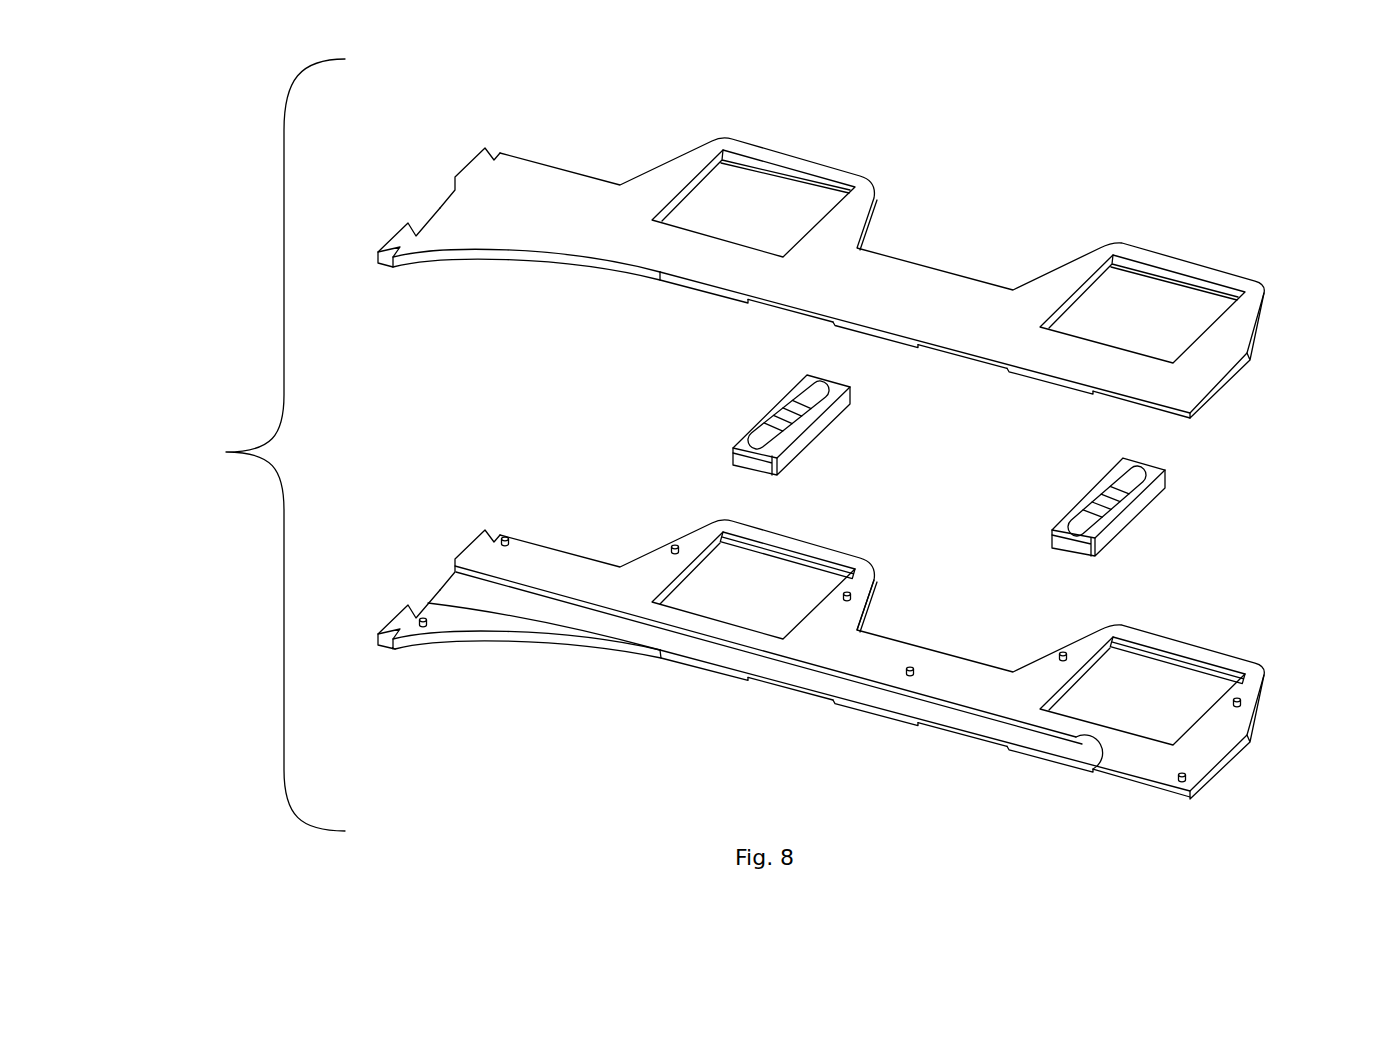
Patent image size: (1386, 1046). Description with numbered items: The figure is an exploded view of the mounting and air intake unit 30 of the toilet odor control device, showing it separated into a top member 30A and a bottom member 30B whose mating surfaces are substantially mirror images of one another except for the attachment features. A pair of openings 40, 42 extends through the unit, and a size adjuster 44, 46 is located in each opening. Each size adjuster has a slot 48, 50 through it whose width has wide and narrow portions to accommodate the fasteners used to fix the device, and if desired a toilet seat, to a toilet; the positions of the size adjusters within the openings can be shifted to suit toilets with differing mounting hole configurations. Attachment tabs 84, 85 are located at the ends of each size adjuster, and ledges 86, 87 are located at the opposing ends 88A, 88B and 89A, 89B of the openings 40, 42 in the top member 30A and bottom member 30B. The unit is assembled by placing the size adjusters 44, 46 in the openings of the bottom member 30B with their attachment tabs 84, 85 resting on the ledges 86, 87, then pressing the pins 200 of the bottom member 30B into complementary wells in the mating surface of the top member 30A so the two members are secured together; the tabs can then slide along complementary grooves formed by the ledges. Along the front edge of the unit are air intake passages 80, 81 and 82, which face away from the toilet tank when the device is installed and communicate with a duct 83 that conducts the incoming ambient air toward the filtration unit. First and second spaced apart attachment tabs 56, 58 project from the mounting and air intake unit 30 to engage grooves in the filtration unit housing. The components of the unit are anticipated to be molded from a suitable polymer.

The mounting and air intake unit 30 is at (226, 452).
The top member 30A is at (913, 280).
The bottom member 30B is at (943, 663).
The opening 40 is at (765, 202).
The opening 42 is at (1165, 300).
The size adjuster 44 is at (752, 412).
The second insert block 46 is at (1080, 504).
The slot 48 is at (817, 388).
The slot 50 is at (1133, 478).
The attachment tab 56 is at (395, 240).
The attachment tab 58 is at (473, 165).
The air intake passage 80 is at (707, 287).
The air intake passage 81 is at (880, 333).
The air intake passage 82 is at (1048, 380).
The duct 83 is at (477, 598).
The attachment tab 84 is at (743, 463).
The attachment tab 85 is at (1063, 552).
The ledge 86 is at (857, 555).
The ledge 87 is at (1247, 665).
The end of opening 88A is at (755, 525).
The end of opening 88B is at (670, 617).
The end of opening 89A is at (1127, 630).
The end of opening 89B is at (1063, 722).
The pins 200 is at (503, 537).